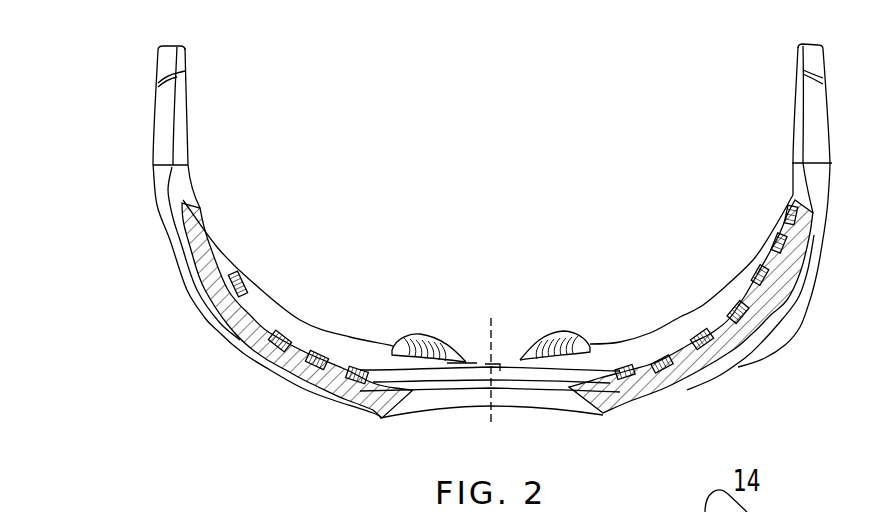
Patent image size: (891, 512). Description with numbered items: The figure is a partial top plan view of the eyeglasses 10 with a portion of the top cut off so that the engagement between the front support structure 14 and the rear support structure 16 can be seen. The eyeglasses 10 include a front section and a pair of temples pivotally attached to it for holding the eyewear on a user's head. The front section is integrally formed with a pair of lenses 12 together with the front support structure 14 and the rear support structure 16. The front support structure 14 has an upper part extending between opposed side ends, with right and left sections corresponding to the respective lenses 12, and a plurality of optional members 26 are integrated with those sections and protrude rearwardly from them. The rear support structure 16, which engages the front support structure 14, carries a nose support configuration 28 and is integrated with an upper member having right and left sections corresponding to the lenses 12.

The eyeglasses 10 is at (630, 184).
The lenses 12 is at (647, 288).
The front support structure 14 is at (822, 400).
The rear support structure 16 is at (284, 238).
The optional members 26 is at (680, 343).
The nose support configuration 28 is at (465, 360).